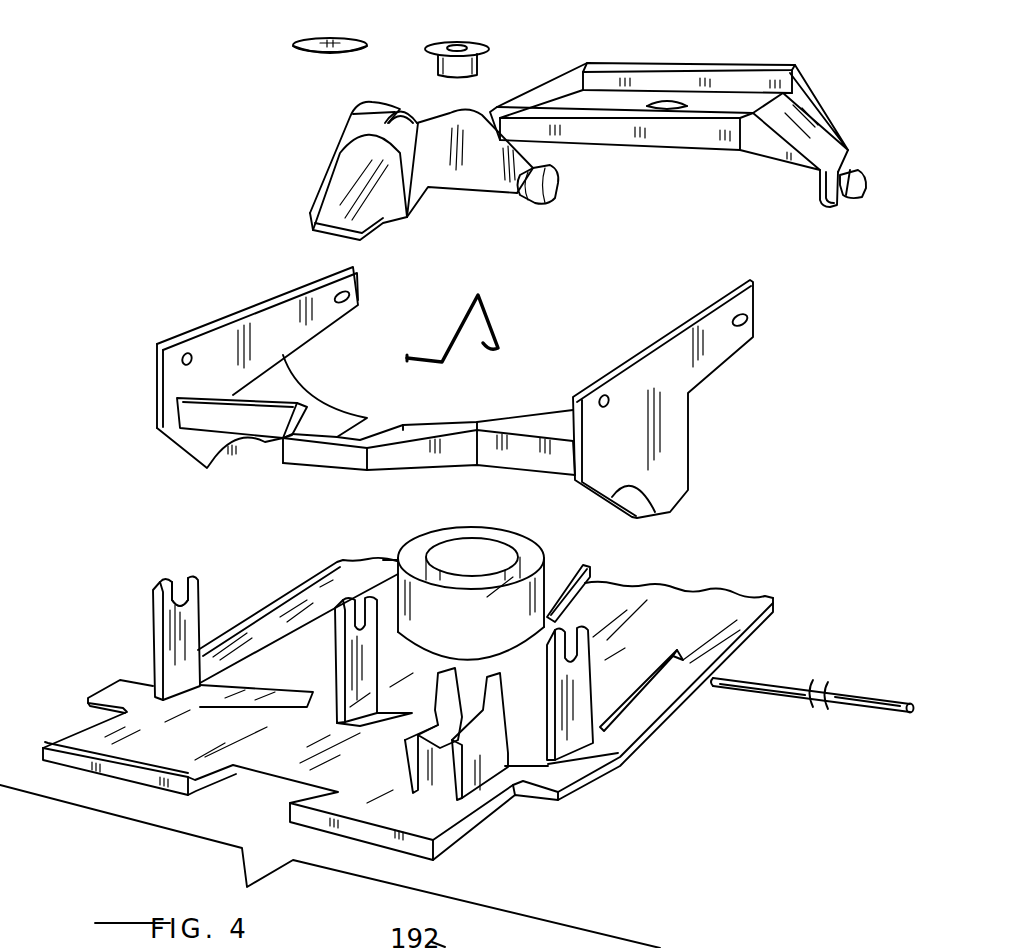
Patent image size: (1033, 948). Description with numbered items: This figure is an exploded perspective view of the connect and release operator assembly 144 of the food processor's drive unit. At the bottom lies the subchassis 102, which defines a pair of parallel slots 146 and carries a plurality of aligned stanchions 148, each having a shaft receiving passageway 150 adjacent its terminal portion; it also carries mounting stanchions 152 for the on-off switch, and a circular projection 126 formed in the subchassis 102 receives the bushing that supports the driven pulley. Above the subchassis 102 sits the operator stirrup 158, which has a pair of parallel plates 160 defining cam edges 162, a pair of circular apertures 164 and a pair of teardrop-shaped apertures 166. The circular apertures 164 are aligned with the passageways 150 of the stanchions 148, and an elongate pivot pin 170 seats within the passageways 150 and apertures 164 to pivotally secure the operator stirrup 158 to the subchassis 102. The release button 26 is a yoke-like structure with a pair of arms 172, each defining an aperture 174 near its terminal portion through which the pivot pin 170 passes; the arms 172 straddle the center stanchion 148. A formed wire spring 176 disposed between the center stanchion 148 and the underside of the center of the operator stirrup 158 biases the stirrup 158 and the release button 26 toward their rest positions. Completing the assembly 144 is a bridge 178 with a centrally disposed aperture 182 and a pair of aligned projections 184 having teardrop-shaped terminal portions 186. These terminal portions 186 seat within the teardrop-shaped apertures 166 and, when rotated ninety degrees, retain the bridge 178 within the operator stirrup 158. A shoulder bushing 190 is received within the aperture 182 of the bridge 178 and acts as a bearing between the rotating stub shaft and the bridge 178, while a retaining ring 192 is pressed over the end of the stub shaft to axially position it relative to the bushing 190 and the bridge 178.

The release button 26 is at (358, 168).
The subchassis 102 is at (695, 605).
The circular projection 126 is at (485, 532).
The connect and release operator assembly 144 is at (193, 250).
The parallel slots 146 is at (266, 668).
The stanchions 148 is at (187, 605).
The shaft receiving passageway 150 is at (158, 610).
The mounting stanchions 152 is at (462, 775).
The operator stirrup 158 is at (405, 460).
The parallel plates 160 is at (272, 320).
The cam edges 162 is at (655, 512).
The circular apertures 164 is at (186, 355).
The teardrop-shaped apertures 166 is at (352, 296).
The pivot pin 170 is at (850, 728).
The arms 172 is at (390, 103).
The apertures 174 is at (561, 205).
The formed wire spring 176 is at (488, 322).
The bridge 178 is at (722, 100).
The centrally disposed aperture 182 is at (665, 102).
The aligned projections 184 is at (853, 158).
The teardrop-shaped terminal portions 186 is at (858, 200).
The shoulder bushing 190 is at (428, 62).
The retaining ring 192 is at (305, 60).